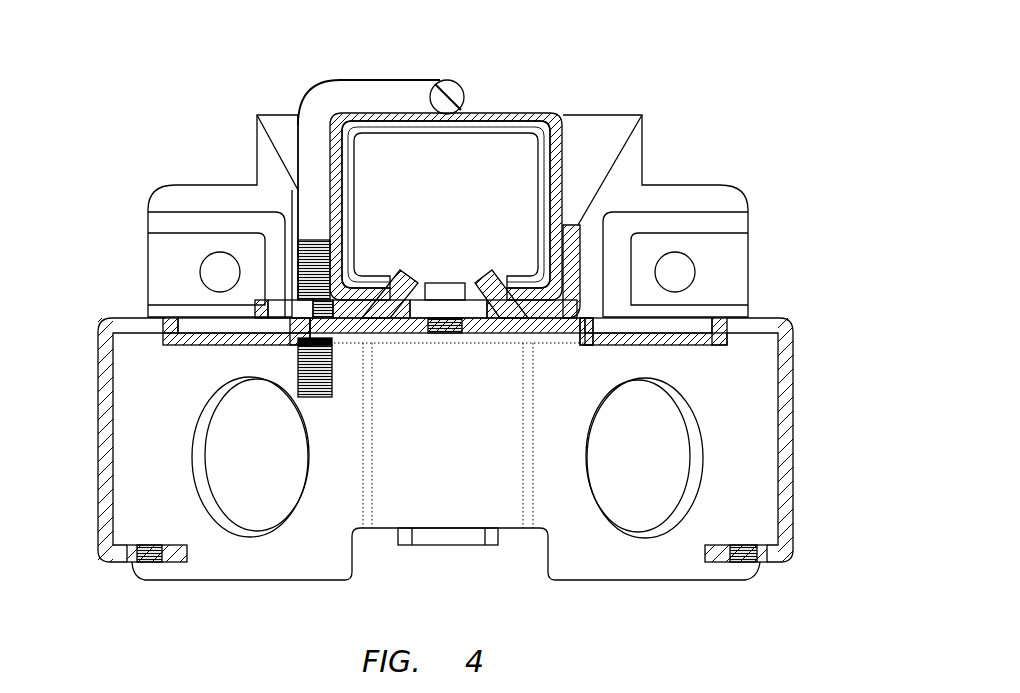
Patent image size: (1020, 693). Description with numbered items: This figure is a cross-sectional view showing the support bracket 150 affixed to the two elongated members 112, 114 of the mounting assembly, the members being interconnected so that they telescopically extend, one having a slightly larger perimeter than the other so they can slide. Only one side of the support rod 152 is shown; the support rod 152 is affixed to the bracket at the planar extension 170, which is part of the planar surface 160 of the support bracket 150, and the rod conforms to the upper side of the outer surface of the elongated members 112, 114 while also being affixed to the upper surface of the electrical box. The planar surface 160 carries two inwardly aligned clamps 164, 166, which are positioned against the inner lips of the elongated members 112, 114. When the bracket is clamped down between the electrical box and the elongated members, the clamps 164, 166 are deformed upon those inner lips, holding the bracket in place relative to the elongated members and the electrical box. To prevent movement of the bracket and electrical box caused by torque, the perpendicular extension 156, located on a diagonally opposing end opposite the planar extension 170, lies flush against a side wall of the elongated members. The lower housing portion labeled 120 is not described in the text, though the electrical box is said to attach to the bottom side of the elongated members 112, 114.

The elongated member 112 is at (472, 118).
The elongated member 114 is at (512, 122).
The housing 120 is at (262, 568).
The support bracket 150 is at (297, 370).
The support rod 152 is at (370, 90).
The perpendicular extension 156 is at (590, 343).
The planar surface 160 is at (370, 287).
The clamp 164 is at (413, 302).
The clamp 166 is at (485, 302).
The planar extension 170 is at (387, 219).